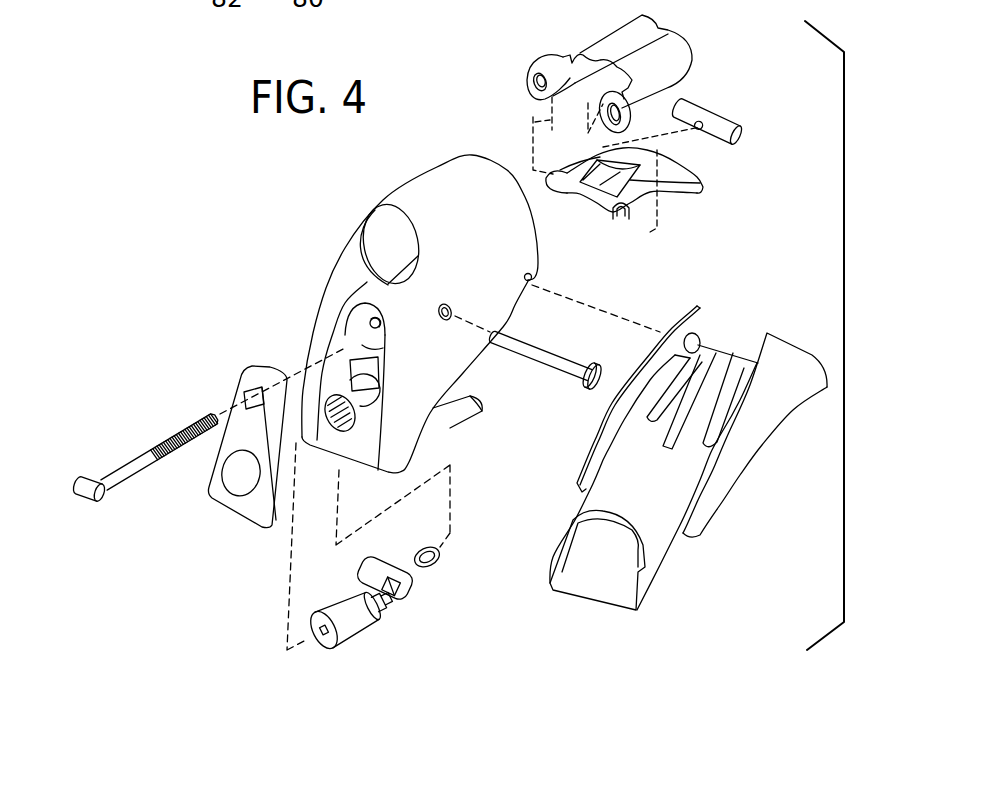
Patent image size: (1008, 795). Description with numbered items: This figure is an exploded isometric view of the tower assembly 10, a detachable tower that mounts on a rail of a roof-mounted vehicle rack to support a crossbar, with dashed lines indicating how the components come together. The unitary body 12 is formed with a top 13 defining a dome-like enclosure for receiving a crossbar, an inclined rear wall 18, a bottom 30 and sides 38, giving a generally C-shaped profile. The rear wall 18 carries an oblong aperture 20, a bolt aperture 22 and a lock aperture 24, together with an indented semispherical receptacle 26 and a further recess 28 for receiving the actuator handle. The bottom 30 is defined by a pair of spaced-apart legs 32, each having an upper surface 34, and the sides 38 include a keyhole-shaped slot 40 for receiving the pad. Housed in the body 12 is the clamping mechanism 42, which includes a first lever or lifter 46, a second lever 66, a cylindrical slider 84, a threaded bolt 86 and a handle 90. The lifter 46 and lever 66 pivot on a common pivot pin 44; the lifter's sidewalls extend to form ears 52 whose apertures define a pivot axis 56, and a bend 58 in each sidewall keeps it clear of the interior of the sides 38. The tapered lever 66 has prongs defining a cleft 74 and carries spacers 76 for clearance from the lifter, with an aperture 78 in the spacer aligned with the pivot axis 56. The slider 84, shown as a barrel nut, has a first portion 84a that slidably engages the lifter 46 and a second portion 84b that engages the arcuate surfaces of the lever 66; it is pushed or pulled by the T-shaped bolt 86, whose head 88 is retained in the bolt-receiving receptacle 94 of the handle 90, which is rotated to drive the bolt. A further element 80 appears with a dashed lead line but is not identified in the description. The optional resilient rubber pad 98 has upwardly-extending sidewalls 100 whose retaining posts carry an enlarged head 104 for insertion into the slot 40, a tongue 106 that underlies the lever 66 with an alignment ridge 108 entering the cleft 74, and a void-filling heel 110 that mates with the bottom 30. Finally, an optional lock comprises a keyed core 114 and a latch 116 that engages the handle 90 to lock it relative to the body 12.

The tower assembly 10 is at (243, 204).
The unitary body 12 is at (438, 245).
The top 13 is at (428, 187).
The inclined rear wall 18 is at (373, 294).
The oblong aperture 20 is at (378, 222).
The bolt aperture 22 is at (380, 326).
The lock aperture 24 is at (340, 425).
The semispherical receptacle 26 is at (375, 349).
The recess 28 is at (363, 329).
The bottom 30 is at (463, 444).
The legs 32 is at (467, 420).
The upper surface 34 is at (465, 400).
The sides 38 is at (504, 283).
The keyhole-shaped slot 40 is at (531, 282).
The clamping mechanism 42 is at (708, 37).
The pivot pin 44 is at (560, 370).
The lifter 46 is at (688, 58).
The ears 52 is at (535, 65).
The pivot axis 56 is at (512, 76).
The bend 58 is at (557, 57).
The second lever 66 is at (680, 182).
The cleft 74 is at (607, 172).
The spacers 76 is at (543, 180).
The aperture 78 is at (623, 220).
The bore 80 is at (657, 243).
The slider 84 is at (750, 133).
The first portion 84a is at (717, 110).
The second portion 84b is at (720, 147).
The threaded bolt 86 is at (137, 467).
The head 88 is at (80, 496).
The handle 90 is at (260, 520).
The bolt-receiving receptacle 94 is at (253, 392).
The pad 98 is at (660, 523).
The sidewalls 100 is at (672, 332).
The enlarged head 104 is at (707, 353).
The tongue 106 is at (689, 338).
The alignment ridge 108 is at (717, 357).
The void-filling heel 110 is at (625, 567).
The keyed core 114 is at (358, 623).
The latch 116 is at (410, 588).